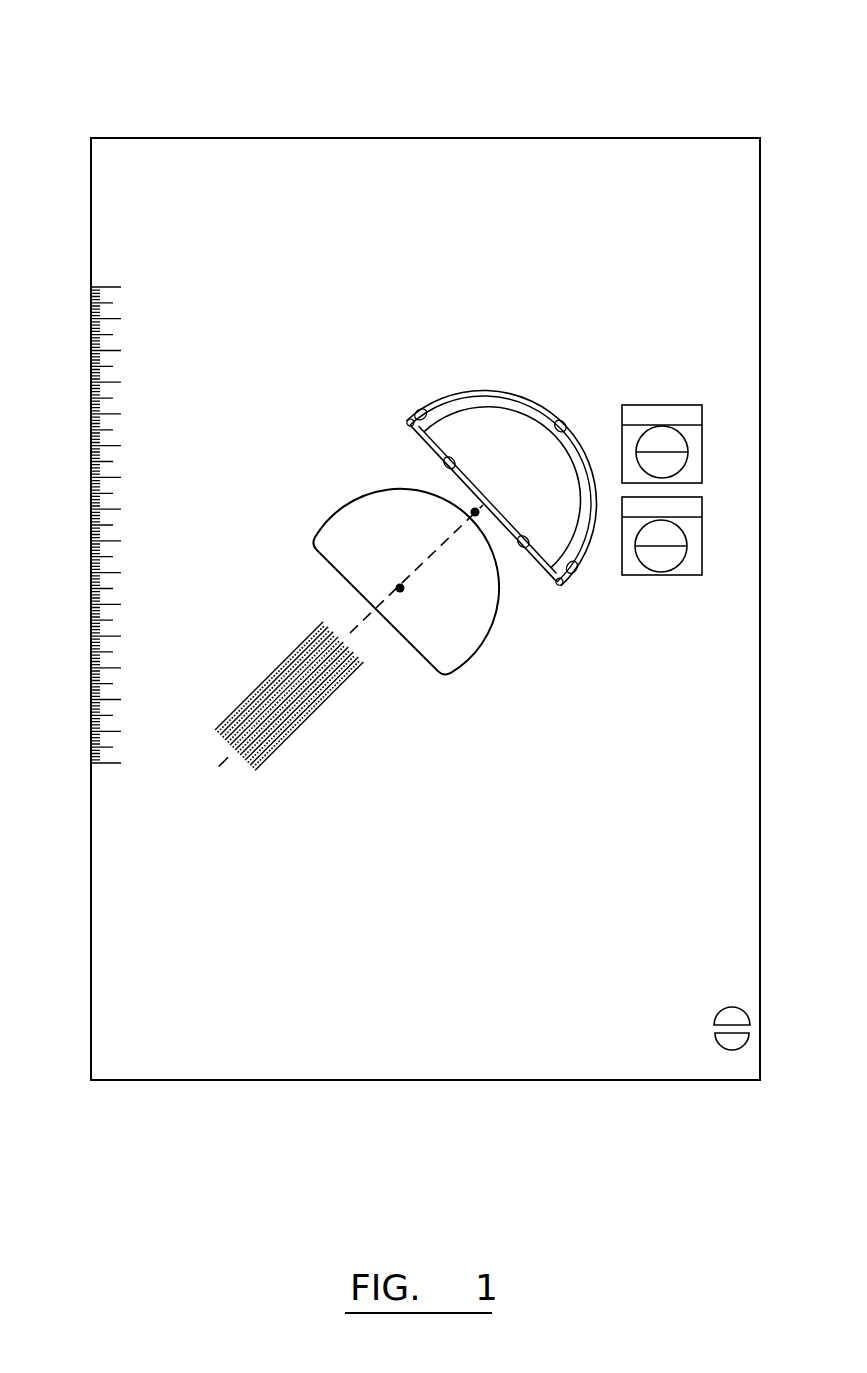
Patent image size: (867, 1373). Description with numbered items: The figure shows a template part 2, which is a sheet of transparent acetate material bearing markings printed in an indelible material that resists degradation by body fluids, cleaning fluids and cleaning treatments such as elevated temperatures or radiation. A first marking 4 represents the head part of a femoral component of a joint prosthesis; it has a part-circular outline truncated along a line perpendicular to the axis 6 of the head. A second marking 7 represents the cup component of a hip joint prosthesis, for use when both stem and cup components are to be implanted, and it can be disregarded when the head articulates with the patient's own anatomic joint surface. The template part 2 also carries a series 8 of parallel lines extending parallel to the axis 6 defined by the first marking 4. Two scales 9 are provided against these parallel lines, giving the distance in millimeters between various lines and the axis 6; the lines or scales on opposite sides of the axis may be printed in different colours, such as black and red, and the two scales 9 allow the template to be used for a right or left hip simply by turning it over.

The template part 2 is at (253, 134).
The first marking 4 is at (458, 613).
The axis 6 is at (427, 558).
The second marking 7 is at (500, 413).
The series of parallel lines 8 is at (290, 690).
The scales 9 is at (382, 662).